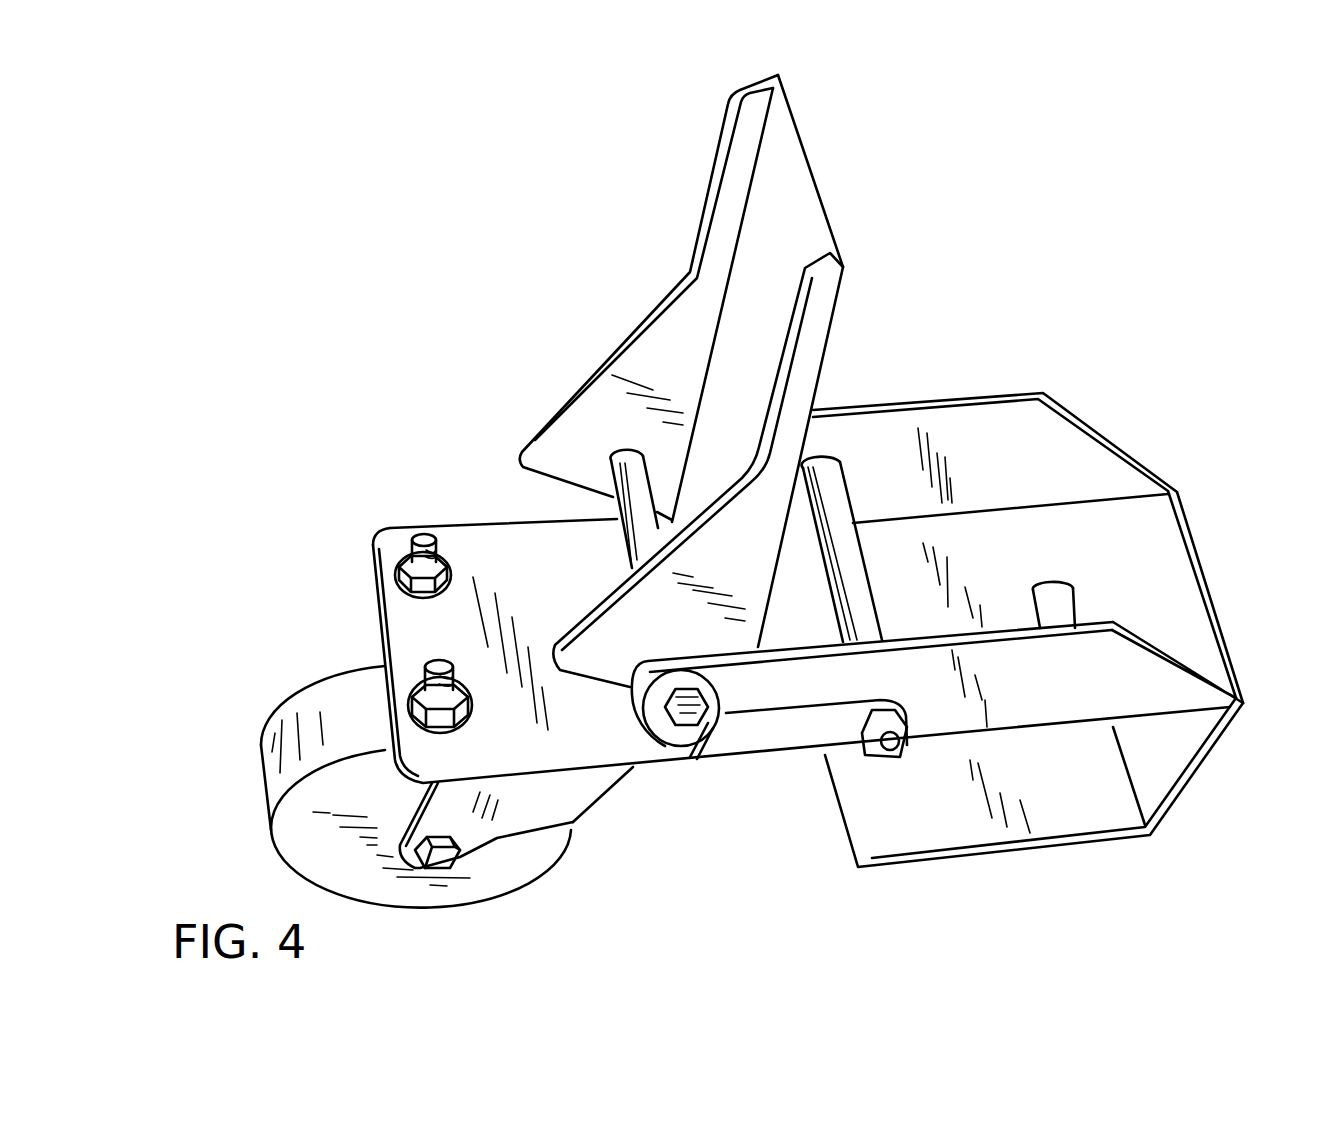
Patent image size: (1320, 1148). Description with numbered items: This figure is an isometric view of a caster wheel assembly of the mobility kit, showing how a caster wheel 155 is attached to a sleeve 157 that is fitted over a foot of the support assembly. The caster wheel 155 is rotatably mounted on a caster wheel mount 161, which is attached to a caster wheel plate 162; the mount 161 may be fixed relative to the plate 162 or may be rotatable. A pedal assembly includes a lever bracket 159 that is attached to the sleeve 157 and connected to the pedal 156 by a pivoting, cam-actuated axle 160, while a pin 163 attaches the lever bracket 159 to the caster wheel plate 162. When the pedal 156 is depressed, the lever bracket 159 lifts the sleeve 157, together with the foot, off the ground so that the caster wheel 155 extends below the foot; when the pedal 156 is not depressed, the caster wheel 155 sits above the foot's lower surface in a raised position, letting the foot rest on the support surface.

The caster wheel 155 is at (470, 883).
The pedal 156 is at (677, 327).
The sleeve 157 is at (1182, 792).
The lever bracket 159 is at (1077, 442).
The cam-actuated axle 160 is at (680, 713).
The caster wheel mount 161 is at (573, 803).
The caster wheel plate 162 is at (800, 747).
The pin 163 is at (878, 758).